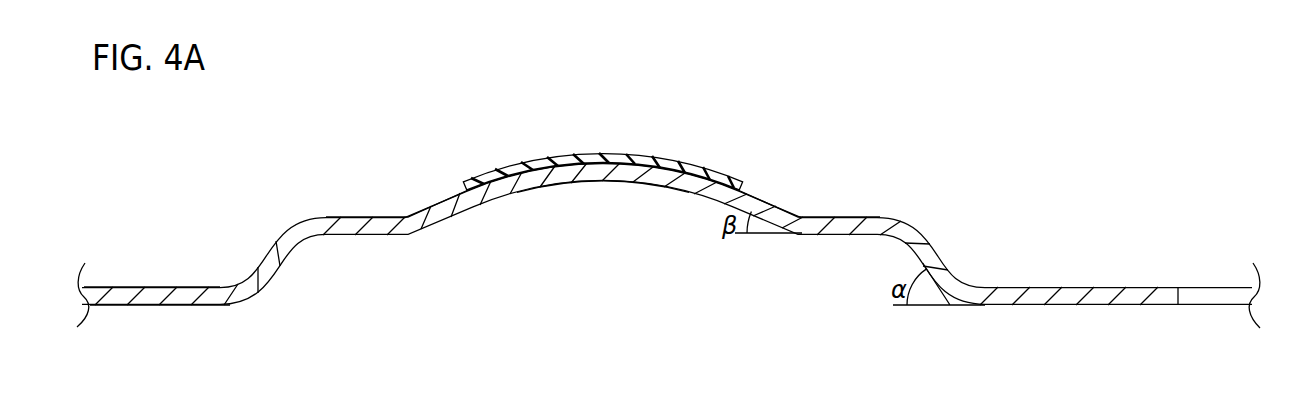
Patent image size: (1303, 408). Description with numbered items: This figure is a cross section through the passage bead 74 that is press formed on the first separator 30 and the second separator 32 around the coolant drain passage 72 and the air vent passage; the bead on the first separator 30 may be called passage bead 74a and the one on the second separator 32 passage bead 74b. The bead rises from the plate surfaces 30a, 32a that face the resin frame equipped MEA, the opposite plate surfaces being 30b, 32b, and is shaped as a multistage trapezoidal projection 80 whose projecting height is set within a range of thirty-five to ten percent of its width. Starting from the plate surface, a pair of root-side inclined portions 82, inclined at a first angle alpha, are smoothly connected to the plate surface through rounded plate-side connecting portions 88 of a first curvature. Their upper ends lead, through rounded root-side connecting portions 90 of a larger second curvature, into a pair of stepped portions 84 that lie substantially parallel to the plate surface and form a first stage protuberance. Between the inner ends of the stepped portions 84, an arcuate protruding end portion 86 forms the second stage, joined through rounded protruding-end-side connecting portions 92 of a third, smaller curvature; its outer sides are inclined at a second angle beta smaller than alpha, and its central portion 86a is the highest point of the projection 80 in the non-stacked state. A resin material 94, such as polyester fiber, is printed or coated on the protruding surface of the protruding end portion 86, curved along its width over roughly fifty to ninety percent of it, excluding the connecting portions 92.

The first separator 30 is at (664, 240).
The second separator 32 is at (154, 207).
The surface of first separator 30a is at (152, 257).
The surface of second separator 32a is at (100, 285).
The second surface of panel 30b is at (160, 335).
The second surface of panel 32b is at (120, 307).
The passage bead 74 is at (558, 150).
The passage bead of first separator 74a is at (558, 150).
The passage bead of second separator 74b is at (364, 150).
The projection 80 is at (457, 207).
The root-side inclined portion 82 is at (287, 255).
The stepped portion 84 is at (352, 223).
The protruding end portion 86 is at (527, 183).
The central portion of protruding end portion 86a is at (597, 175).
The plate-side connecting portion 88 is at (233, 283).
The root-side connecting portion 90 is at (317, 227).
The protruding-end-side connecting portion 92 is at (413, 225).
The resin material 94 is at (605, 153).
The coolant drain passage 72 is at (1193, 295).